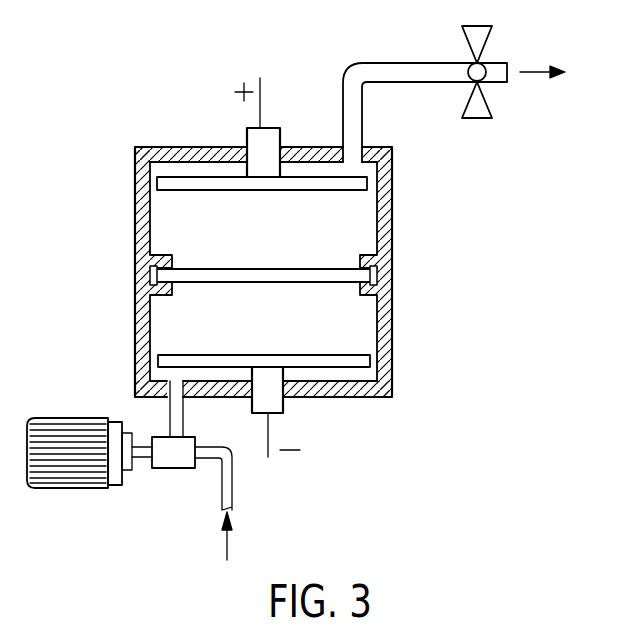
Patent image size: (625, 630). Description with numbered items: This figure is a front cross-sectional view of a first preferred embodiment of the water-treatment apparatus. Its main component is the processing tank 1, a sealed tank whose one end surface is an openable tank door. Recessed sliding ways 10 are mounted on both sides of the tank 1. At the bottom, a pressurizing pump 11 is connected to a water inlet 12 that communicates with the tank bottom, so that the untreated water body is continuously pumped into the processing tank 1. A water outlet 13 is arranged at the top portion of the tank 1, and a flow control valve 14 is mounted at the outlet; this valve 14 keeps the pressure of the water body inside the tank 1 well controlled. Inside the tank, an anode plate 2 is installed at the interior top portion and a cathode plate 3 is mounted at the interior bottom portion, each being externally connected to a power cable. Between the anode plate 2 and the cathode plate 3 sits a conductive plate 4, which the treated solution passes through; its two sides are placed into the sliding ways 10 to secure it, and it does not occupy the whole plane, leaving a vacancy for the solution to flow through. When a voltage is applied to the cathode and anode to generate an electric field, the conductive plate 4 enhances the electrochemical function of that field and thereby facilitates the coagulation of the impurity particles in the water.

The processing tank 1 is at (390, 237).
The anode plate 2 is at (374, 178).
The cathode plate 3 is at (364, 361).
The conductive plate 4 is at (340, 283).
The recessed sliding ways 10 is at (150, 275).
The pressurizing pump 11 is at (80, 490).
The water inlet 12 is at (181, 384).
The water outlet 13 is at (354, 151).
The flow control valve 14 is at (484, 34).